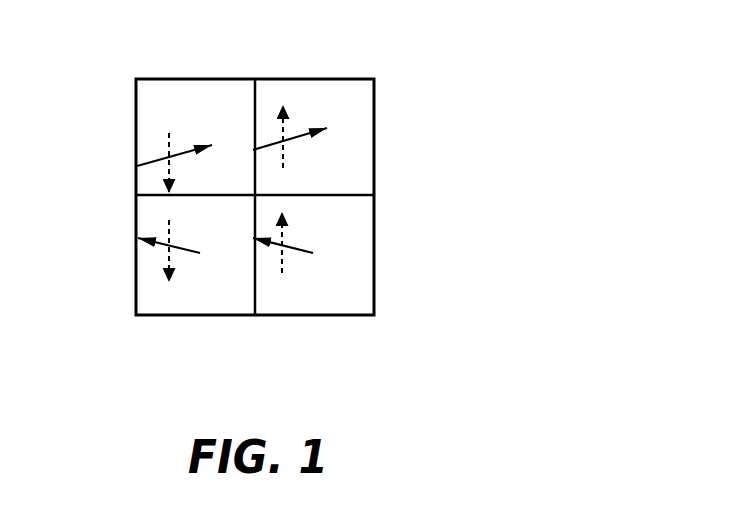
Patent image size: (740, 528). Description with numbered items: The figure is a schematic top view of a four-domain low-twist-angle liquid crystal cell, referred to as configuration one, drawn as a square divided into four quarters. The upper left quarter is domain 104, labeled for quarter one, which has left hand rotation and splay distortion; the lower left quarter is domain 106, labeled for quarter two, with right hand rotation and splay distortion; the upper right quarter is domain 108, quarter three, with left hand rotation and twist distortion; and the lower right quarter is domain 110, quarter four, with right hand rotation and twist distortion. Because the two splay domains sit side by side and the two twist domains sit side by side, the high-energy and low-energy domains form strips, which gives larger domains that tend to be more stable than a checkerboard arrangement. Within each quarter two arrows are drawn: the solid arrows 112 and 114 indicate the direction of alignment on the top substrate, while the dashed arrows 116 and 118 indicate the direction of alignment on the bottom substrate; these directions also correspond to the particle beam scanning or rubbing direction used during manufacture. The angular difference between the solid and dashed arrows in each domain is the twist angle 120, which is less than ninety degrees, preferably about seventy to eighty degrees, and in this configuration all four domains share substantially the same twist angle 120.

The domain 104 is at (152, 112).
The domain 106 is at (152, 290).
The domain 108 is at (360, 126).
The domain 110 is at (347, 285).
The solid arrow 112 is at (201, 143).
The solid arrow 114 is at (186, 253).
The dashed arrow 116 is at (168, 141).
The dashed arrow 118 is at (285, 152).
The twist angle 120 is at (185, 154).